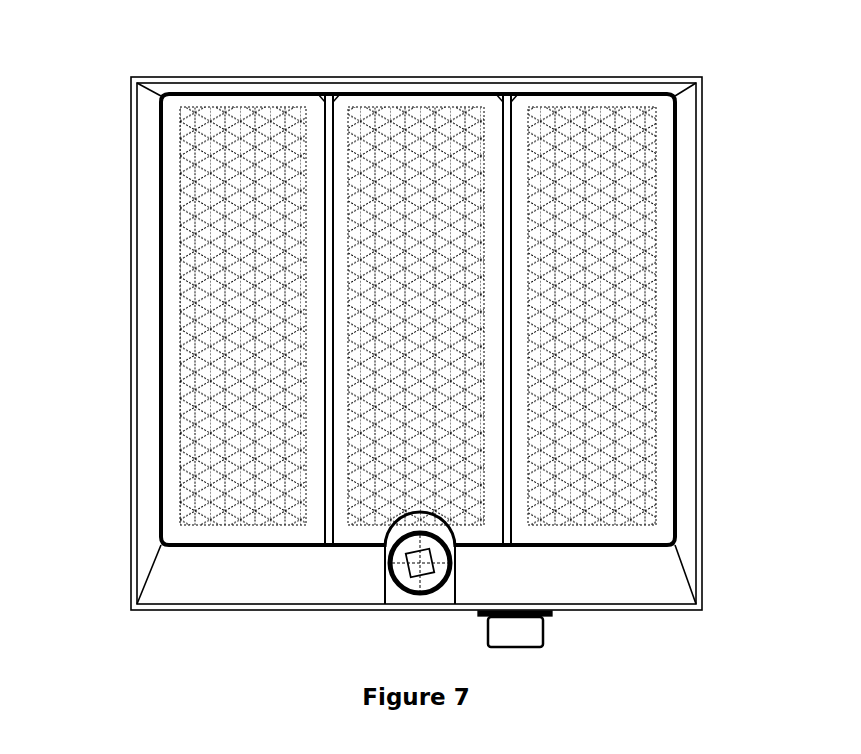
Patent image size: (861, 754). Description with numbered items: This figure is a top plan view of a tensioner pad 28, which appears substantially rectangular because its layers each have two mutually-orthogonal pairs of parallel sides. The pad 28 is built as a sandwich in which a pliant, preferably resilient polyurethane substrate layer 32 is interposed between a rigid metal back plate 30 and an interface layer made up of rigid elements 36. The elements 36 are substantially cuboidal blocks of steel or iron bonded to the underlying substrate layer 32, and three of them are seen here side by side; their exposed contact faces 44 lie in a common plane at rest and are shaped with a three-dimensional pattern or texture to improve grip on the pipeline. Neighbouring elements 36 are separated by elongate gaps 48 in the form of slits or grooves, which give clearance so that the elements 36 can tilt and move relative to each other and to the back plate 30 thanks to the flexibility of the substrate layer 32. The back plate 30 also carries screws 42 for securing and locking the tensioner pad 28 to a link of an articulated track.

The tensioner pad 28 is at (64, 133).
The back plate 30 is at (703, 470).
The substrate layer 32 is at (683, 219).
The elements 36 is at (160, 285).
The screws 42 is at (386, 571).
The contact faces 44 is at (238, 122).
The elongate gaps 48 is at (329, 98).